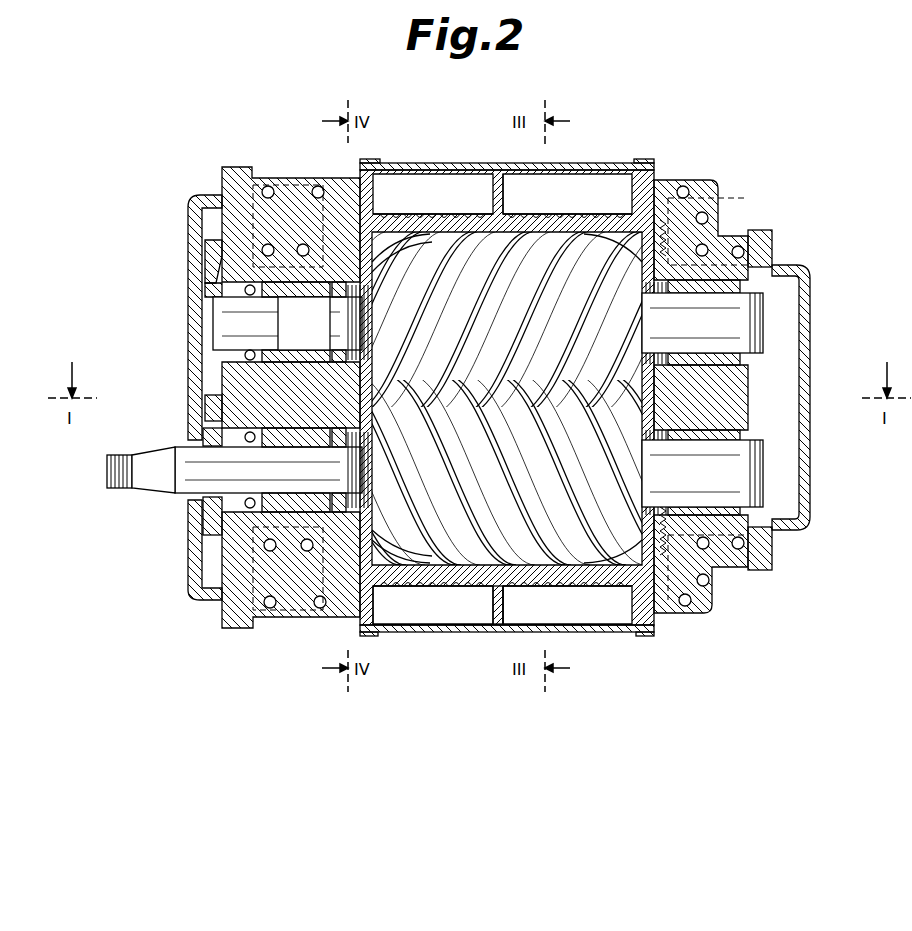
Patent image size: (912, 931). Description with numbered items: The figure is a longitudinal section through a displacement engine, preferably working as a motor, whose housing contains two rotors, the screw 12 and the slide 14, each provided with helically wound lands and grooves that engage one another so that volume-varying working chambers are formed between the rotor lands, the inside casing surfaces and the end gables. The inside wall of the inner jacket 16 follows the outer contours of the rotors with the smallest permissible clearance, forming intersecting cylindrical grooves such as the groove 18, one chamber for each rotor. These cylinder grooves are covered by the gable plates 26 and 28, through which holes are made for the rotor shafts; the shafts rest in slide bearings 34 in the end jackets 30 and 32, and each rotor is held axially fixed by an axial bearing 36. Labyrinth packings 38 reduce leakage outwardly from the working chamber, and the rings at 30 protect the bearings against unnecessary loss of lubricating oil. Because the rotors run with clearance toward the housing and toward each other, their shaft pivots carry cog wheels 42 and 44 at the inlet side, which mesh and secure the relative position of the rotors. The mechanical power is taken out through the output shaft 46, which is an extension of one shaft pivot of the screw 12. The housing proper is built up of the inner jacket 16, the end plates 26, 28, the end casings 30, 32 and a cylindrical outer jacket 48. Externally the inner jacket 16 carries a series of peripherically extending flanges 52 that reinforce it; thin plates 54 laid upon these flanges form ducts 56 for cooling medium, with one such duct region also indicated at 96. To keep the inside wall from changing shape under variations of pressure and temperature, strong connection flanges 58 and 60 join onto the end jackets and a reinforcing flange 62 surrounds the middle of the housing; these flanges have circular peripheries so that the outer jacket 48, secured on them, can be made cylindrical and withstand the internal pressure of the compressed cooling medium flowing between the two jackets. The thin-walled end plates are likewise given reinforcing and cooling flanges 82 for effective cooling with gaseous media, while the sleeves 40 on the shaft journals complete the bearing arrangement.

The screw 12 is at (530, 464).
The slide 14 is at (428, 309).
The inner jacket 16 is at (588, 576).
The cylindrical groove 18 is at (418, 556).
The gable plate 26 is at (350, 610).
The gable plate 28 is at (646, 178).
The end jacket 30 is at (265, 560).
The end jacket 32 is at (712, 597).
The slide bearing 34 is at (300, 362).
The axial bearing 36 is at (256, 300).
The labyrinth packing 38 is at (370, 348).
The shaft journal 40 is at (696, 298).
The cog wheel 42 is at (205, 522).
The cog wheel 44 is at (215, 272).
The output shaft 46 is at (172, 450).
The cylindrical outer jacket 48 is at (400, 632).
The peripherically extending flange 52 is at (520, 214).
The thin plate 54 is at (440, 214).
The cooling duct 56 is at (398, 214).
The connection flange 58 is at (365, 628).
The connection flange 60 is at (645, 630).
The reinforcing flange 62 is at (492, 620).
The reinforcing and cooling flange 82 is at (380, 244).
The cavity 96 is at (388, 615).